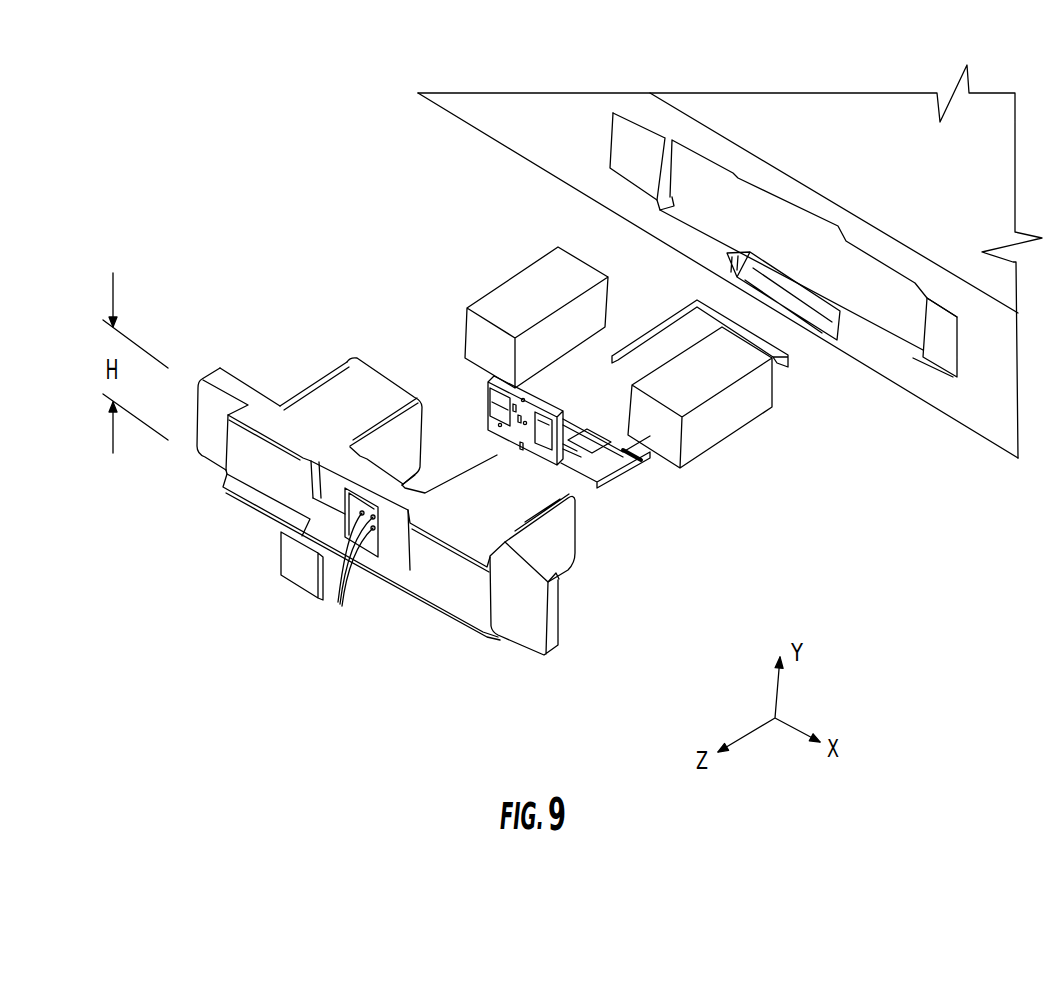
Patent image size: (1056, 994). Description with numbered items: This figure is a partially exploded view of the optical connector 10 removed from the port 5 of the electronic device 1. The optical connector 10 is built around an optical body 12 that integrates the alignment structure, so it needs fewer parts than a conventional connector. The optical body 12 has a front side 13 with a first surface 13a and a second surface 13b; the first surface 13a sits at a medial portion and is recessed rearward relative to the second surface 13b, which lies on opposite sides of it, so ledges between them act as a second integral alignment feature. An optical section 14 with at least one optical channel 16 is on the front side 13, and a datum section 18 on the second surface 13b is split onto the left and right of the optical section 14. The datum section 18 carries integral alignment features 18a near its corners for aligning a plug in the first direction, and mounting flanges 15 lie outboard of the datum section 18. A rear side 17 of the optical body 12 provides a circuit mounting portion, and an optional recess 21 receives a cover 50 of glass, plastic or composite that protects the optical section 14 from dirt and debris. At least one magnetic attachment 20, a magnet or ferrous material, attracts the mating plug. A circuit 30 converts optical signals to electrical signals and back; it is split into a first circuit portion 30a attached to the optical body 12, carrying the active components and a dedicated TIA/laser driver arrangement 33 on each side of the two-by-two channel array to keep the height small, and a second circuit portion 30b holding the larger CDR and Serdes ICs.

The electronic device 1 is at (472, 143).
The port 5 is at (890, 332).
The optical connector 10 is at (540, 702).
The optical body 12 is at (262, 395).
The front side 13 is at (378, 578).
The first surface 13a is at (338, 487).
The second surface 13b is at (303, 485).
The optical section 14 is at (378, 540).
The mounting flanges 15 is at (210, 400).
The optical channel 16 is at (340, 604).
The rear side 17 is at (421, 481).
The datum section 18 is at (252, 463).
The integral alignment features 18a is at (247, 487).
The magnetic attachment 20 is at (467, 308).
The recess 21 is at (348, 518).
The circuit 30 is at (611, 357).
The first circuit portion 30a is at (570, 472).
The second circuit portion 30b is at (622, 472).
The TIA/laser driver arrangement 33 is at (526, 378).
The cover 50 is at (287, 568).